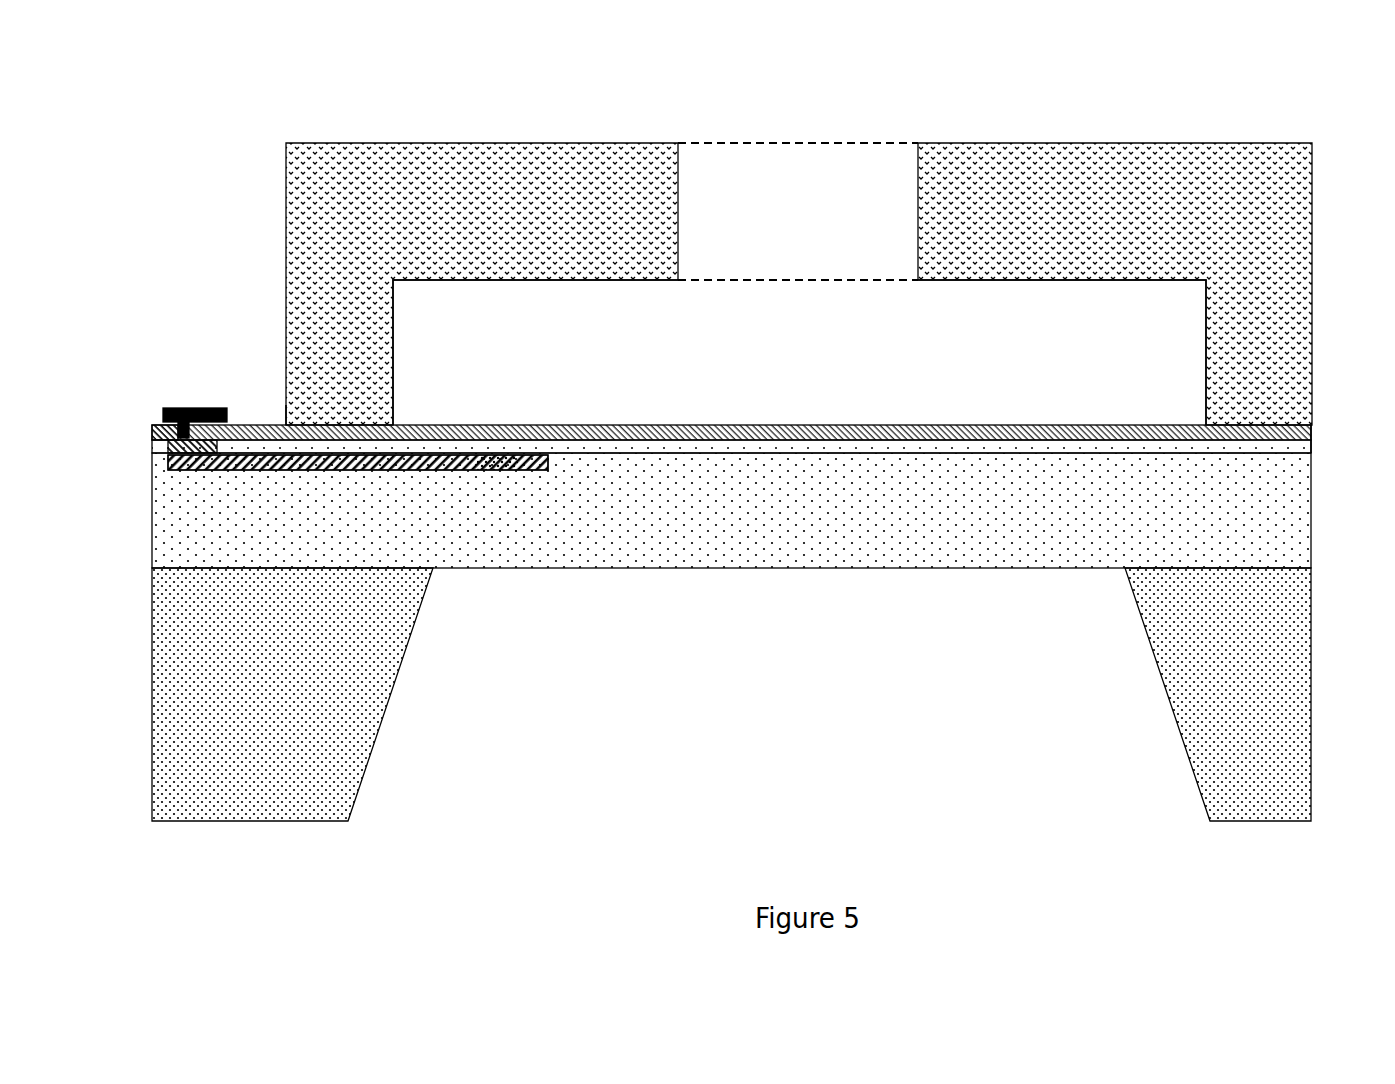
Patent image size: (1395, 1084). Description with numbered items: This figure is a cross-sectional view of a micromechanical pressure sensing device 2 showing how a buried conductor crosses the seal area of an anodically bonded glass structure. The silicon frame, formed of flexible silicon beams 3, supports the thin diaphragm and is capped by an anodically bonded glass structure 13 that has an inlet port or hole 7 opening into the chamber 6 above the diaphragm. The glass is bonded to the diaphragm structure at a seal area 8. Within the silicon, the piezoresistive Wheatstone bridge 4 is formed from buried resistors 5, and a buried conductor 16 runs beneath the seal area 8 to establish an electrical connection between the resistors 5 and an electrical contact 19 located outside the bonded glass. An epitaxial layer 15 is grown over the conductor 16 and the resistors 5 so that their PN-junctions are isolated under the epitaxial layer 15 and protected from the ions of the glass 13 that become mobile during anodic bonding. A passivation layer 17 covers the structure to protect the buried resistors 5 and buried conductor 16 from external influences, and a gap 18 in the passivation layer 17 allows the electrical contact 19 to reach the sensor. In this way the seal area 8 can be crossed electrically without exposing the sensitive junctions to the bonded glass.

The thin diaphragm 2 is at (1330, 438).
The flexible silicon beam 3 is at (165, 533).
The piezoresistive Wheatstone bridge 4 is at (388, 400).
The resistor 5 is at (537, 460).
The chamber 6 is at (437, 303).
The inlet port or hole 7 is at (775, 173).
The seal area 8 is at (278, 395).
The anodically bonded glass structure 13 is at (570, 217).
The epitaxial layer 15 is at (652, 448).
The buried conductor 16 is at (175, 450).
The passivation layer 17 is at (757, 433).
The gap in the passivation layer 18 is at (172, 430).
The electrical contact 19 is at (198, 410).